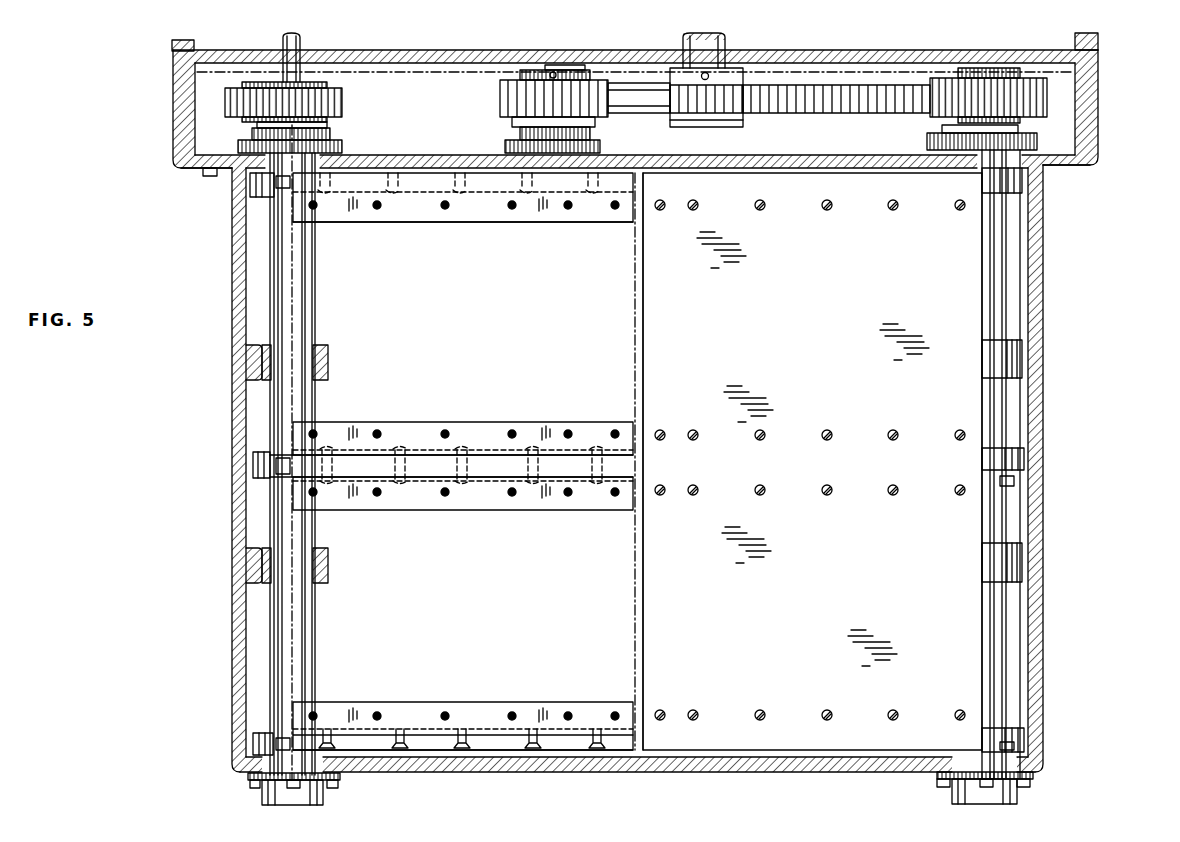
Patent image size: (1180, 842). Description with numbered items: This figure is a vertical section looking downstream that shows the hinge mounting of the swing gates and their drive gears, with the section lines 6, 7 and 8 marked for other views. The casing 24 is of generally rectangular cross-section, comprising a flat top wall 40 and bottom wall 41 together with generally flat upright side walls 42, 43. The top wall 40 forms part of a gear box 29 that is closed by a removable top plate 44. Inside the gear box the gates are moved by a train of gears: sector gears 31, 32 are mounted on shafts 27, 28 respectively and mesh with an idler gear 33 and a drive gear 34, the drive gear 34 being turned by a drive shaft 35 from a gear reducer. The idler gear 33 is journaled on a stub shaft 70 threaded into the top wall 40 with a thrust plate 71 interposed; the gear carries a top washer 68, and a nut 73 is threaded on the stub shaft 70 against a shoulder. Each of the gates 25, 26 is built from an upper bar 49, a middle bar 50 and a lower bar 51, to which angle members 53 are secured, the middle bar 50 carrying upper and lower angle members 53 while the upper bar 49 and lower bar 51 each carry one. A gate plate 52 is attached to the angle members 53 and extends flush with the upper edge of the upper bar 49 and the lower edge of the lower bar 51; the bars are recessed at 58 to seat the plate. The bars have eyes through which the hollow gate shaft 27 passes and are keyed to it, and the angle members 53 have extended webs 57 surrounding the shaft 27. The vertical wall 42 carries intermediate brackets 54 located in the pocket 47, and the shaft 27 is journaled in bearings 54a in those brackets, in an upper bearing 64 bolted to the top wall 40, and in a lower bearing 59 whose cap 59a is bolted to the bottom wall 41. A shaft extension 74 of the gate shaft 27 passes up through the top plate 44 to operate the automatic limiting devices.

The casing 24 is at (1055, 520).
The gate 25 is at (512, 338).
The gate 26 is at (797, 338).
The gate shaft 27 is at (308, 306).
The shaft 28 is at (996, 298).
The gear box 29 is at (177, 148).
The sector gear 31 is at (364, 92).
The sector gear 32 is at (846, 102).
The idler gear 33 is at (598, 102).
The drive gear 34 is at (738, 96).
The drive shaft 35 is at (722, 46).
The top wall 40 is at (797, 162).
The bottom wall 41 is at (768, 766).
The side wall 42 is at (237, 489).
The side wall 43 is at (1046, 643).
The top plate 44 is at (866, 50).
The pocket 47 is at (258, 398).
The upper bar 49 is at (428, 222).
The middle bar 50 is at (433, 465).
The lower bar 51 is at (424, 743).
The gate plate 52 is at (675, 564).
The angle member 53 is at (494, 220).
The intermediate bracket 54 is at (326, 350).
The bearing 54a is at (328, 363).
The extended web 57 is at (277, 198).
The recess 58 is at (294, 180).
The lower bearing 59 is at (342, 795).
The cap 59a is at (278, 794).
The upper bearing 64 is at (325, 137).
The top washer 68 is at (522, 76).
The stub shaft 70 is at (582, 66).
The thrust plate 71 is at (530, 142).
The nut 73 is at (550, 72).
The shaft extension 74 is at (284, 45).
The section line 6- 6 is at (210, 108).
The section line 7- 7 is at (240, 203).
The section line 8- 8 is at (588, 37).